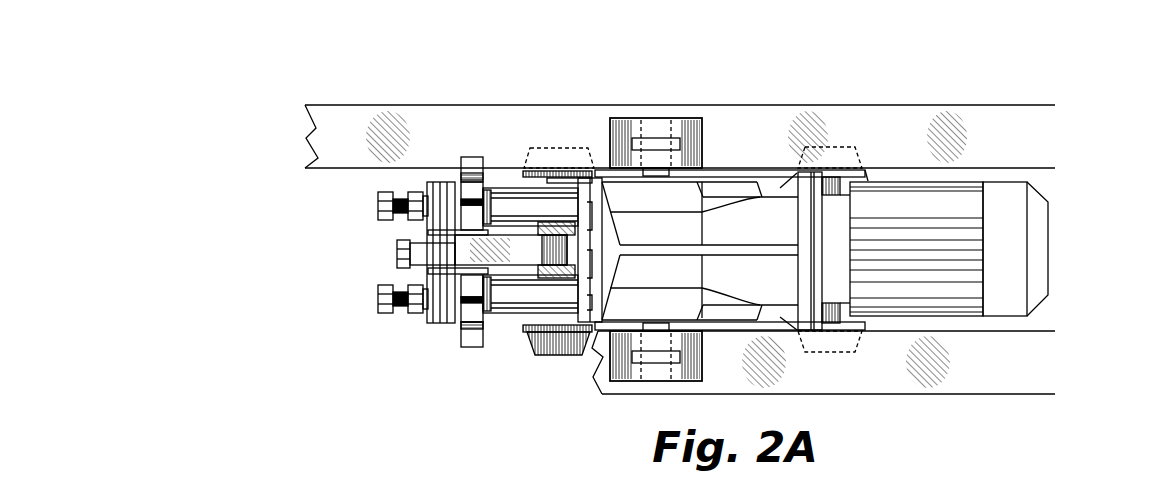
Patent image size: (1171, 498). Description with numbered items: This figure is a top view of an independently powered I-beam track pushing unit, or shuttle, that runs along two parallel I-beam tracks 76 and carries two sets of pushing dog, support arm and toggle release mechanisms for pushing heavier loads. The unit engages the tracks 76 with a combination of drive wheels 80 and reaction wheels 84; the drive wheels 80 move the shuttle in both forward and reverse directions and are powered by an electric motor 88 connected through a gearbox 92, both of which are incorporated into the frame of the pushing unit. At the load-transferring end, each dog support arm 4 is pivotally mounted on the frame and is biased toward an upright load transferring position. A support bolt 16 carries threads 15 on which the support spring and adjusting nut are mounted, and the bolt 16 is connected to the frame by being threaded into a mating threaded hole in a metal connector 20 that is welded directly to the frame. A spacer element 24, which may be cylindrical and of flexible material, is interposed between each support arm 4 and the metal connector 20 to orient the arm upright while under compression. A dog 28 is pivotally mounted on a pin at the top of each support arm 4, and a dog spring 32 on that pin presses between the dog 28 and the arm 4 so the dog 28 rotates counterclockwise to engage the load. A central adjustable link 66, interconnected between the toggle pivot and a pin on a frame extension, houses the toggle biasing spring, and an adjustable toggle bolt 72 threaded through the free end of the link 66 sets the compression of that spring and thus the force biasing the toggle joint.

The dog support arm 4 is at (473, 162).
The threads 15 is at (382, 198).
The support bolt 16 is at (382, 302).
The metal connector 20 is at (560, 203).
The spacer element 24 is at (502, 203).
The dog 28 is at (442, 185).
The dog spring 32 is at (460, 177).
The central adjustable link 66 is at (523, 250).
The adjustable toggle bolt 72 is at (397, 253).
The I-beam tracks 76 is at (988, 133).
The drive wheels 80 is at (657, 147).
The reaction wheels 84 is at (555, 155).
The electric motor 88 is at (887, 203).
The gearbox 92 is at (768, 217).